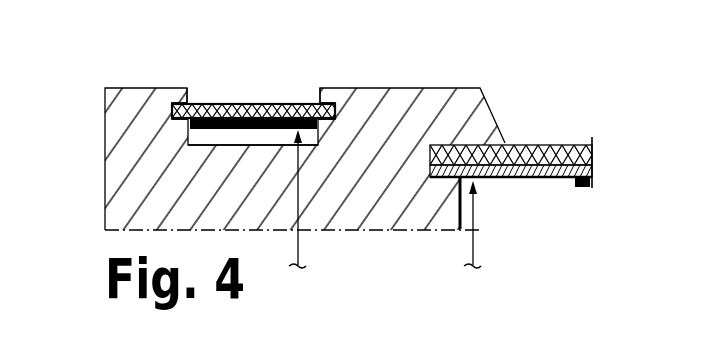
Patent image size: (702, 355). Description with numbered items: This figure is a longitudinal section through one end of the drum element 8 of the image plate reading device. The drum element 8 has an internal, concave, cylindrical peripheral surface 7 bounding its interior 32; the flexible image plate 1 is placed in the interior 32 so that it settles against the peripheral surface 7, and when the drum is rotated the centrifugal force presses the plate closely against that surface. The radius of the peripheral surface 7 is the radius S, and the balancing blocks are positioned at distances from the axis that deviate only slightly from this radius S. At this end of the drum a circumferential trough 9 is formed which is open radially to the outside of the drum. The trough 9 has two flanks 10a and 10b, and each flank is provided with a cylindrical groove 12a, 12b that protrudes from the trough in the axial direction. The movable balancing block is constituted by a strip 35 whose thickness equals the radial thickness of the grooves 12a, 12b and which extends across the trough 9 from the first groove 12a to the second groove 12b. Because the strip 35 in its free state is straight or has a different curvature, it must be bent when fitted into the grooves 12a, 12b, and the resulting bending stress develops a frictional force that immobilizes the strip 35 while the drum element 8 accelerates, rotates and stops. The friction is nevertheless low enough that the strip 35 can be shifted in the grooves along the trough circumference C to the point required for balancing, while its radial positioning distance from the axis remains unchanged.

The image plate 1 is at (583, 188).
The peripheral surface 7 is at (551, 178).
The drum element 8 is at (551, 132).
The trough 9 is at (188, 141).
The flank 10a is at (188, 94).
The flank 10b is at (320, 98).
The groove 12a is at (172, 110).
The groove 12b is at (338, 110).
The interior 32 is at (532, 221).
The strip 35 is at (260, 110).
The circumference C is at (180, 122).
The radius S is at (464, 222).